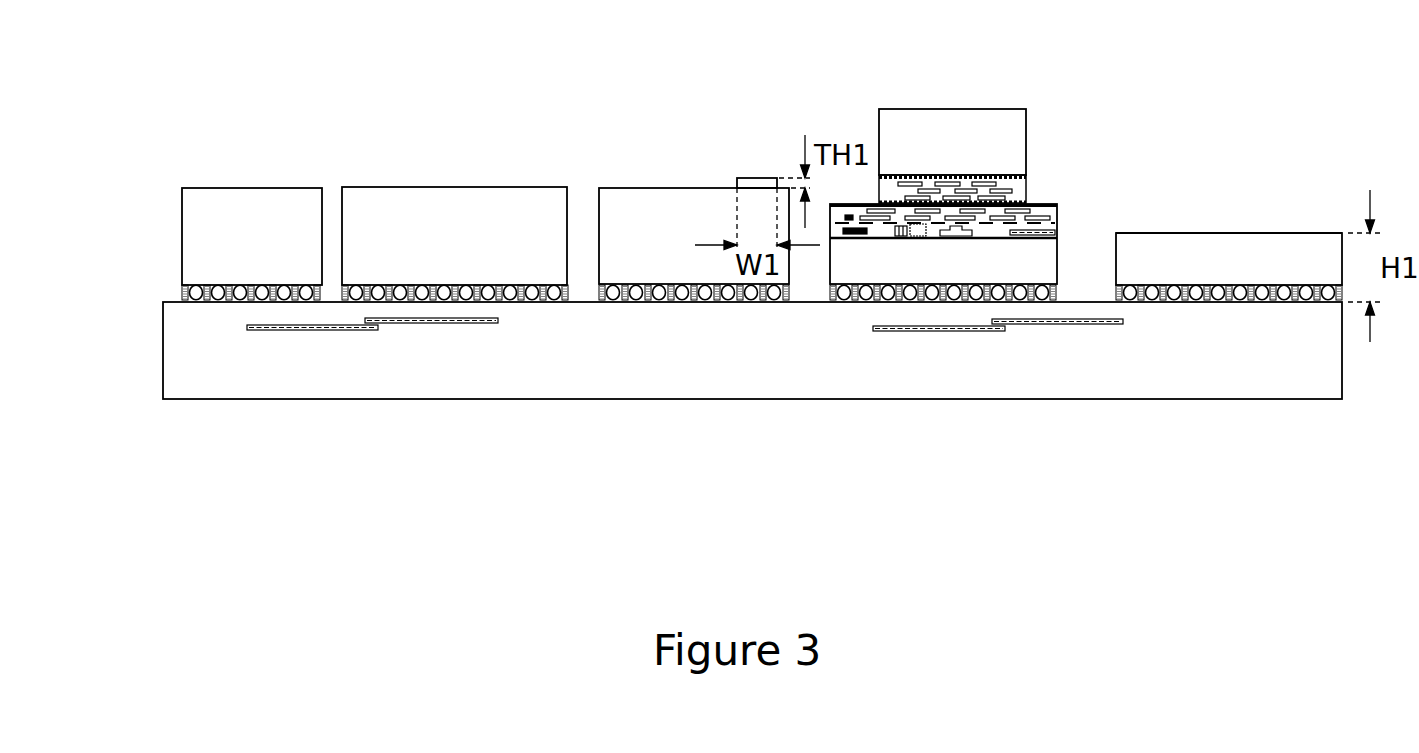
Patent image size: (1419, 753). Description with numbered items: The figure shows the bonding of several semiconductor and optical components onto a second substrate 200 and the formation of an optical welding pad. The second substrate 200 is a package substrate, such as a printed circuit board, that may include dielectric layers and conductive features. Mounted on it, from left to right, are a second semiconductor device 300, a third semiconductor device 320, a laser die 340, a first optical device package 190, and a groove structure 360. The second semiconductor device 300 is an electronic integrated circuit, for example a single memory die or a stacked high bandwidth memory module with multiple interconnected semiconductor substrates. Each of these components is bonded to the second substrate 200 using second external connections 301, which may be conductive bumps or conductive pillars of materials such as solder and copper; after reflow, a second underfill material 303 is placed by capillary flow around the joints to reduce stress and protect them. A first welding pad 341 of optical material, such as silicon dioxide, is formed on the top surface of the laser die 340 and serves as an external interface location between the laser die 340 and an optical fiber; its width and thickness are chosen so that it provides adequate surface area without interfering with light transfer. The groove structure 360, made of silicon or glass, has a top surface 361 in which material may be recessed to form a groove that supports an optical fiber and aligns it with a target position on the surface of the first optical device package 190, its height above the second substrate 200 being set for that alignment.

The first optical device package 190 is at (870, 128).
The second substrate 200 is at (143, 360).
The second semiconductor device 300 is at (252, 220).
The second external connections 301 is at (196, 292).
The second underfill material 303 is at (185, 283).
The third semiconductor device 320 is at (455, 220).
The laser die 340 is at (647, 220).
The first welding pad 341 is at (757, 178).
The groove structure 360 is at (1228, 258).
The top surface 361 is at (1262, 233).